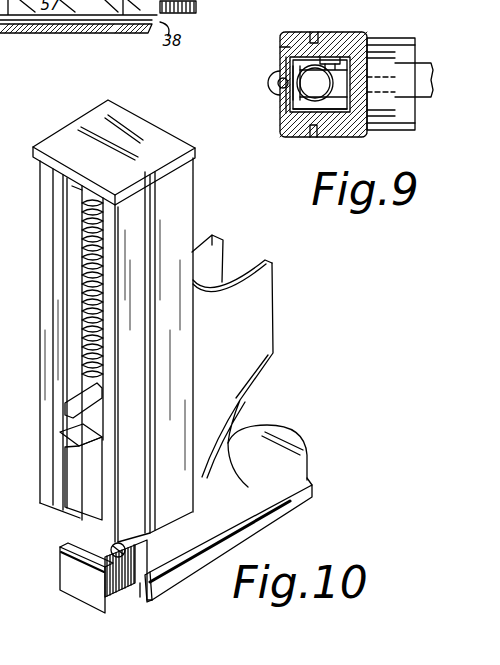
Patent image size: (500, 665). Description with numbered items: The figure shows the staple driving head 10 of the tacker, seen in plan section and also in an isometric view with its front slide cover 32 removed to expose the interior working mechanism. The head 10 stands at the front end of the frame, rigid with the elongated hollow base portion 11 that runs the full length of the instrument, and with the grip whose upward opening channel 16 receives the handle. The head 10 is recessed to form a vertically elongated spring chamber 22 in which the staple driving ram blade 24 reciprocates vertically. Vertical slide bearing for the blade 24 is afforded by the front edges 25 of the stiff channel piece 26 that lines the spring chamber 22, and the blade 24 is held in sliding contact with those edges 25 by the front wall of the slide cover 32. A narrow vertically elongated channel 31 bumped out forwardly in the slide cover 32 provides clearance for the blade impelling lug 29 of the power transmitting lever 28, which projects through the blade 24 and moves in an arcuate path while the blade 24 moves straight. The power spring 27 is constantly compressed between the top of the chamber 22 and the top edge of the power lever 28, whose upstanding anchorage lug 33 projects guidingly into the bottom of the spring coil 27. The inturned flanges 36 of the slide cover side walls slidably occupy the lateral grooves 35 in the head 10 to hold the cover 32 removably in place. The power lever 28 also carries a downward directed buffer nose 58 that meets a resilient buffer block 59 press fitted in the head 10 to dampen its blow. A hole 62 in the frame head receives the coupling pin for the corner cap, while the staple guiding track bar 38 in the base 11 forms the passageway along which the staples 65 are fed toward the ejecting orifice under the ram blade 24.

In FIG. 9, the staple driving head 10 is at (382, 60).
In FIG. 10, the staple driving head 10 is at (88, 127).
In FIG. 9, the base portion 11 is at (405, 38).
In FIG. 10, the base portion 11 is at (277, 443).
In FIG. 9, the channel 16 is at (413, 98).
In FIG. 10, the channel 16 is at (233, 270).
In FIG. 9, the spring chamber 22 is at (338, 72).
In FIG. 10, the spring chamber 22 is at (75, 205).
In FIG. 9, the staple driving ram blade 24 is at (287, 100).
In FIG. 10, the front edges 25 is at (63, 230).
In FIG. 9, the channel piece 26 is at (332, 70).
In FIG. 10, the channel piece 26 is at (72, 195).
In FIG. 9, the power spring 27 is at (320, 62).
In FIG. 10, the power spring 27 is at (83, 252).
In FIG. 9, the power transmitting lever 28 is at (423, 83).
In FIG. 9, the blade impelling lug 29 is at (282, 80).
In FIG. 10, the blade impelling lug 29 is at (67, 417).
In FIG. 9, the channel 31 is at (275, 85).
In FIG. 9, the slide cover 32 is at (280, 47).
In FIG. 9, the anchorage lug 33 is at (303, 112).
In FIG. 10, the lateral grooves 35 is at (152, 387).
In FIG. 9, the inturned flanges 36 is at (314, 37).
In FIG. 10, the staple guiding track bar 38 is at (77, 583).
In FIG. 10, the buffer nose 58 is at (97, 443).
In FIG. 10, the buffer block 59 is at (78, 495).
In FIG. 10, the hole 62 is at (124, 546).
In FIG. 10, the staples 65 is at (100, 597).